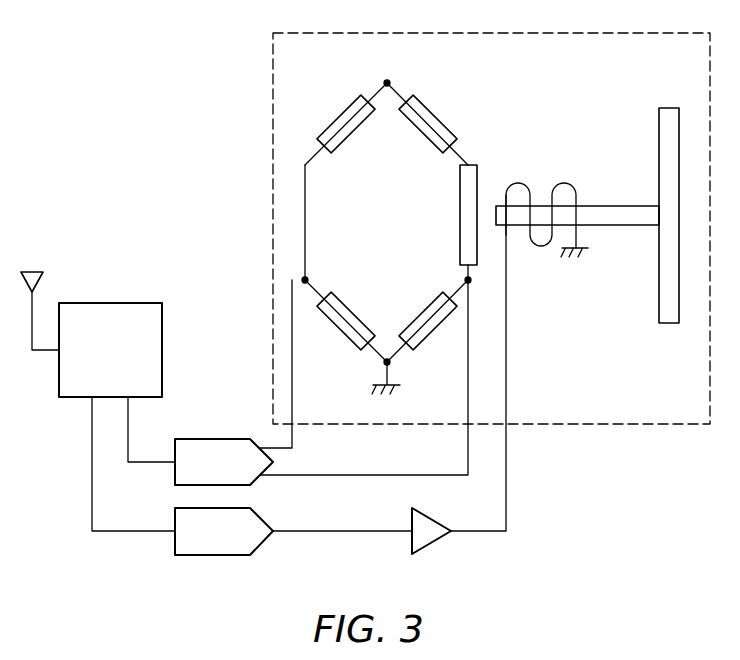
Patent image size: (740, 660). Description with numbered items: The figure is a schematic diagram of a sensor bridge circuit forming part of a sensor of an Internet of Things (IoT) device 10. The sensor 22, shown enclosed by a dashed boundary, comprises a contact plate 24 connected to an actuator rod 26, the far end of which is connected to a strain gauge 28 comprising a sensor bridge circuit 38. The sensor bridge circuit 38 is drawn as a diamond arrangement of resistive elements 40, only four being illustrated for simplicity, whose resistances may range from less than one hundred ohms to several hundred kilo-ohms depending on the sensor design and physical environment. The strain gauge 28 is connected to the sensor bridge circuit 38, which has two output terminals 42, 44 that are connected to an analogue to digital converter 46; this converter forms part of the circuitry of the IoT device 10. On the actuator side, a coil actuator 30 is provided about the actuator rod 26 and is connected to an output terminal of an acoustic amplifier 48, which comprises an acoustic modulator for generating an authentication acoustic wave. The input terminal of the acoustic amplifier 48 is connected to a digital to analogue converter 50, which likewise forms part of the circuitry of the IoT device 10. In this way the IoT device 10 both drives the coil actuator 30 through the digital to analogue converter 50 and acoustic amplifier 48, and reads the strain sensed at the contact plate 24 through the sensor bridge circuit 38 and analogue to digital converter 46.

The IoT device 10 is at (99, 361).
The sensor 22 is at (665, 408).
The contact plate 24 is at (667, 108).
The actuator rod 26 is at (613, 206).
The strain gauge 28 is at (478, 168).
The coil actuator 30 is at (542, 248).
The sensor bridge circuit 38 is at (386, 229).
The resistive elements 40 is at (349, 104).
The output terminal 42 is at (308, 280).
The output terminal 44 is at (466, 280).
The analogue to digital converter 46 is at (210, 472).
The acoustic amplifier 48 is at (431, 548).
The digital to analogue converter 50 is at (210, 541).